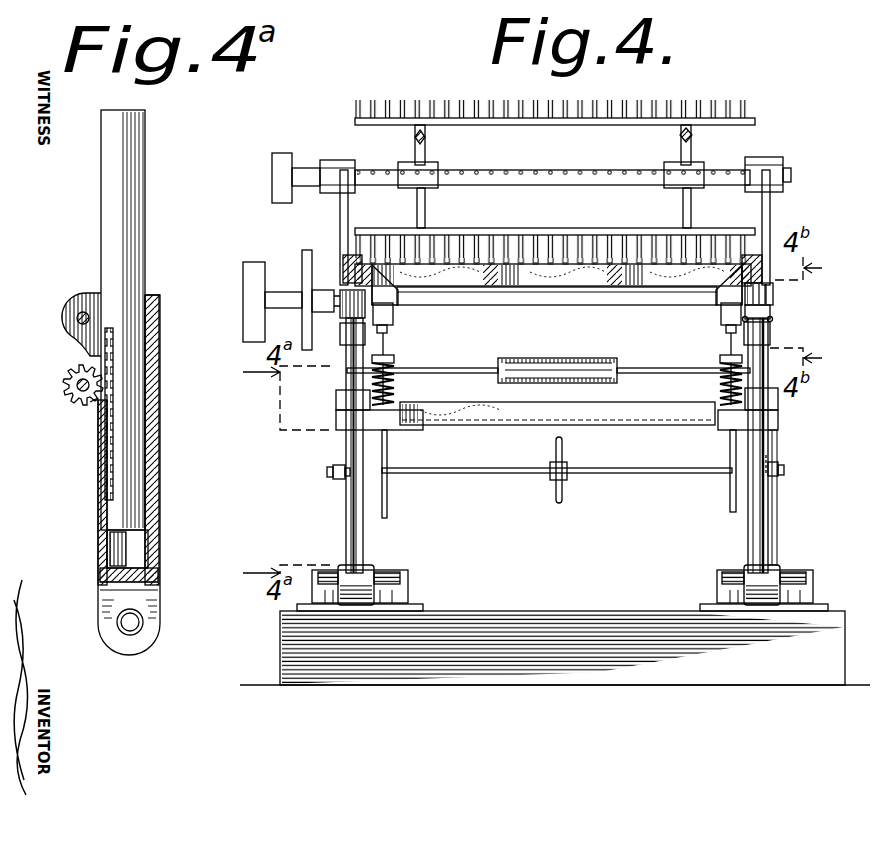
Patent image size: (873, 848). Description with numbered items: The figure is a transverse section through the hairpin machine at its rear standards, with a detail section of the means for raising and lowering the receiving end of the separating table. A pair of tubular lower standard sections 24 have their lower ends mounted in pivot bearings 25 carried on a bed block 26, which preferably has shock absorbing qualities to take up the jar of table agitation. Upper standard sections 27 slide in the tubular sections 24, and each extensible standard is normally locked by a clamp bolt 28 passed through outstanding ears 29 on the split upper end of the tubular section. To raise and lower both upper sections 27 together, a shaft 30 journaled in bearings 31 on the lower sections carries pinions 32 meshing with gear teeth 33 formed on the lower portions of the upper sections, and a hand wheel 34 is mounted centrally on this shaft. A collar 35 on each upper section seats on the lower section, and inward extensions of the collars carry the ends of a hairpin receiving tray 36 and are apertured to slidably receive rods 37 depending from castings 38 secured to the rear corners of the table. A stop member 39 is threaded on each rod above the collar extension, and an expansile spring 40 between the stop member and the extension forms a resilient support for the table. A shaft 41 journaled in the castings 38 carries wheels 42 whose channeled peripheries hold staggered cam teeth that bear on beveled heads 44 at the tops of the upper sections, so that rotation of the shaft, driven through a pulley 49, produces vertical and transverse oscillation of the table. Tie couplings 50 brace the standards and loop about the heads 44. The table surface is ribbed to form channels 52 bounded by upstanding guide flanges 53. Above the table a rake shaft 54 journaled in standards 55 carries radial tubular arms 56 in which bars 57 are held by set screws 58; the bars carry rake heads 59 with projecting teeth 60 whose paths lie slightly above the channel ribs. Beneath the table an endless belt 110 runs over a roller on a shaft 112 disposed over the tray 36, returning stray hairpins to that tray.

In FIG. 4A, the tubular lower standard sections 24 is at (158, 512).
In FIG. 4, the tubular lower standard sections 24 is at (348, 541).
In FIG. 4, the pivot bearings 25 is at (404, 575).
In FIG. 4, the bed block 26 is at (530, 630).
In FIG. 4A, the upper standard sections 27 is at (125, 272).
In FIG. 4, the upper standard sections 27 is at (360, 371).
In FIG. 4A, the clamp bolts 28 is at (77, 318).
In FIG. 4A, the outstanding ears 29 is at (83, 293).
In FIG. 4A, the shaft 30 is at (70, 386).
In FIG. 4, the shaft 30 is at (705, 472).
In FIG. 4, the bearings 31 is at (333, 478).
In FIG. 4A, the pinions 32 is at (88, 400).
In FIG. 4, the pinions 32 is at (344, 465).
In FIG. 4A, the gear teeth 33 is at (112, 447).
In FIG. 4, the hand wheel 34 is at (556, 500).
In FIG. 4, the collar 35 is at (345, 421).
In FIG. 4, the hairpin receiving tray 36 is at (653, 412).
In FIG. 4, the rods 37 is at (388, 508).
In FIG. 4, the castings 38 is at (395, 303).
In FIG. 4, the stop member 39 is at (392, 360).
In FIG. 4, the expansile springs 40 is at (398, 387).
In FIG. 4, the shaft 41 is at (600, 296).
In FIG. 4, the wheels 42 is at (340, 282).
In FIG. 4, the beveled heads 44 is at (346, 340).
In FIG. 4, the pulley 49 is at (256, 278).
In FIG. 4, the tie couplings 50 is at (342, 318).
In FIG. 4, the channels 52 is at (575, 258).
In FIG. 4, the guide flanges 53 is at (347, 240).
In FIG. 4, the shaft 54 is at (312, 166).
In FIG. 4, the standards 55 is at (345, 172).
In FIG. 4, the radial tubular arms 56 is at (693, 152).
In FIG. 4, the bars 57 is at (427, 130).
In FIG. 4, the set screws 58 is at (680, 137).
In FIG. 4, the rake heads 59 is at (612, 228).
In FIG. 4, the teeth 60 is at (569, 170).
In FIG. 4, the endless belt 110 is at (577, 357).
In FIG. 4, the shaft 112 is at (522, 370).